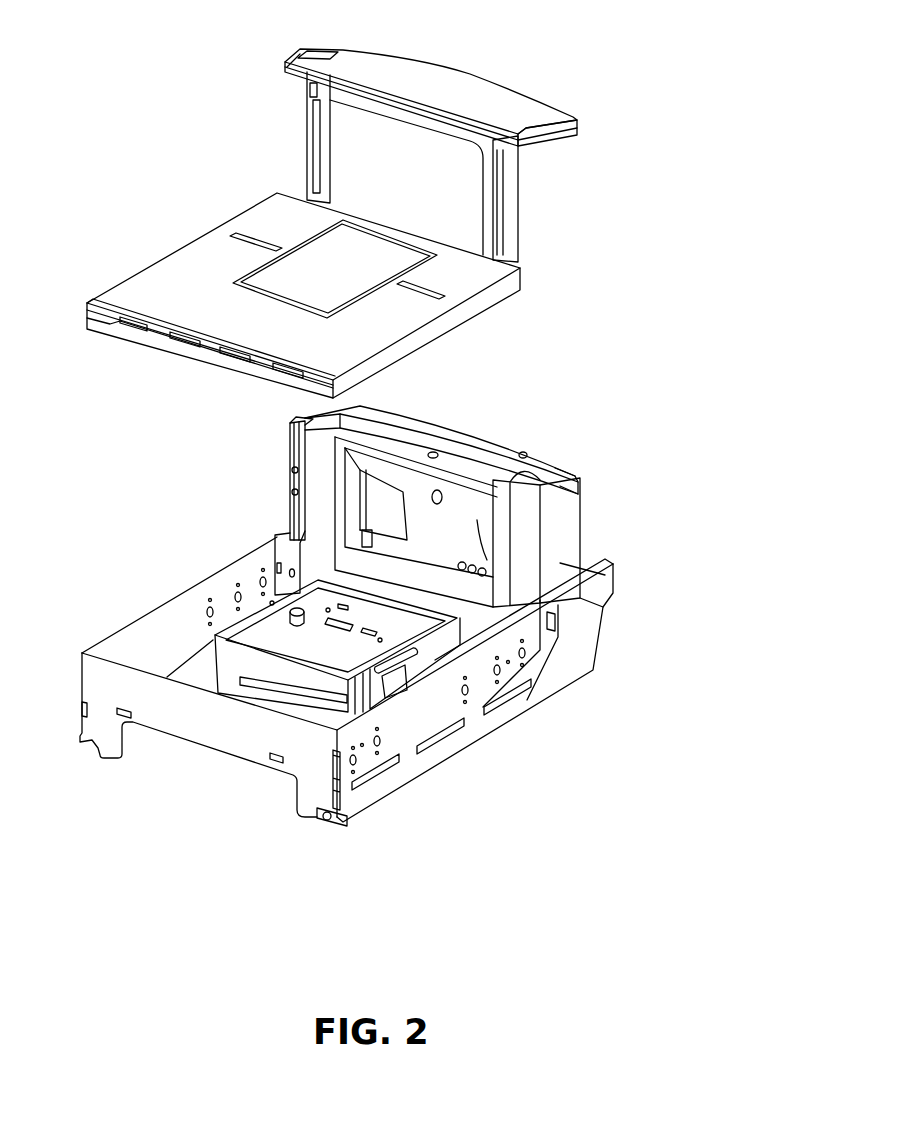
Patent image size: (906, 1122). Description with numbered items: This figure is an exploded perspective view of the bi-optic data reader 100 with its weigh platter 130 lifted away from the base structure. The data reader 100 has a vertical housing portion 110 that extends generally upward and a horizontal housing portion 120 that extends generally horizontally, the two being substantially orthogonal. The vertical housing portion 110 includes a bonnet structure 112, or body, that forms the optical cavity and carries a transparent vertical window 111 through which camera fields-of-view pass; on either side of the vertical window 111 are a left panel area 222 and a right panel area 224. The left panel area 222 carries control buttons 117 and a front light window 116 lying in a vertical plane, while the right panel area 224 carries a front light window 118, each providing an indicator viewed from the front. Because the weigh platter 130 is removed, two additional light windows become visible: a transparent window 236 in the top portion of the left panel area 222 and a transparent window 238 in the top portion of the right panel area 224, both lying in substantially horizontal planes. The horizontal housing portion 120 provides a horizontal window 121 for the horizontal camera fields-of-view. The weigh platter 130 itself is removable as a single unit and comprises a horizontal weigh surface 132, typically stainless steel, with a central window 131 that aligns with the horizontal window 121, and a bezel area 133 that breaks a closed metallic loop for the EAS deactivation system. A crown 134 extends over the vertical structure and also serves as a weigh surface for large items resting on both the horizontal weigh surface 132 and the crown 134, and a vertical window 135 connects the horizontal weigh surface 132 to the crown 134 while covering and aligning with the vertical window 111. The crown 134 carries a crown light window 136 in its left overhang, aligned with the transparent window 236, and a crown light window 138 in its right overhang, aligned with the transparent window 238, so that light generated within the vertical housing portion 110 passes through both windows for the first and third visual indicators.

The bi-optic data reader 100 is at (704, 268).
The vertical housing portion 110 is at (582, 440).
The vertical window 111 is at (421, 518).
The bonnet structure 112 is at (440, 447).
The front light window 116 is at (290, 455).
The control buttons 117 is at (292, 488).
The front light window 118 is at (514, 557).
The horizontal housing portion 120 is at (120, 609).
The horizontal window 121 is at (301, 645).
The weigh platter 130 is at (244, 141).
The window 131 is at (332, 265).
The horizontal weigh surface 132 is at (172, 290).
The bezel area 133 is at (480, 195).
The crown 134 is at (447, 74).
The vertical window 135 is at (496, 196).
The crown light window 136 is at (312, 53).
The crown light window 138 is at (567, 110).
The left panel area 222 is at (290, 514).
The right panel area 224 is at (564, 550).
The transparent window 236 is at (300, 411).
The transparent window 238 is at (579, 478).